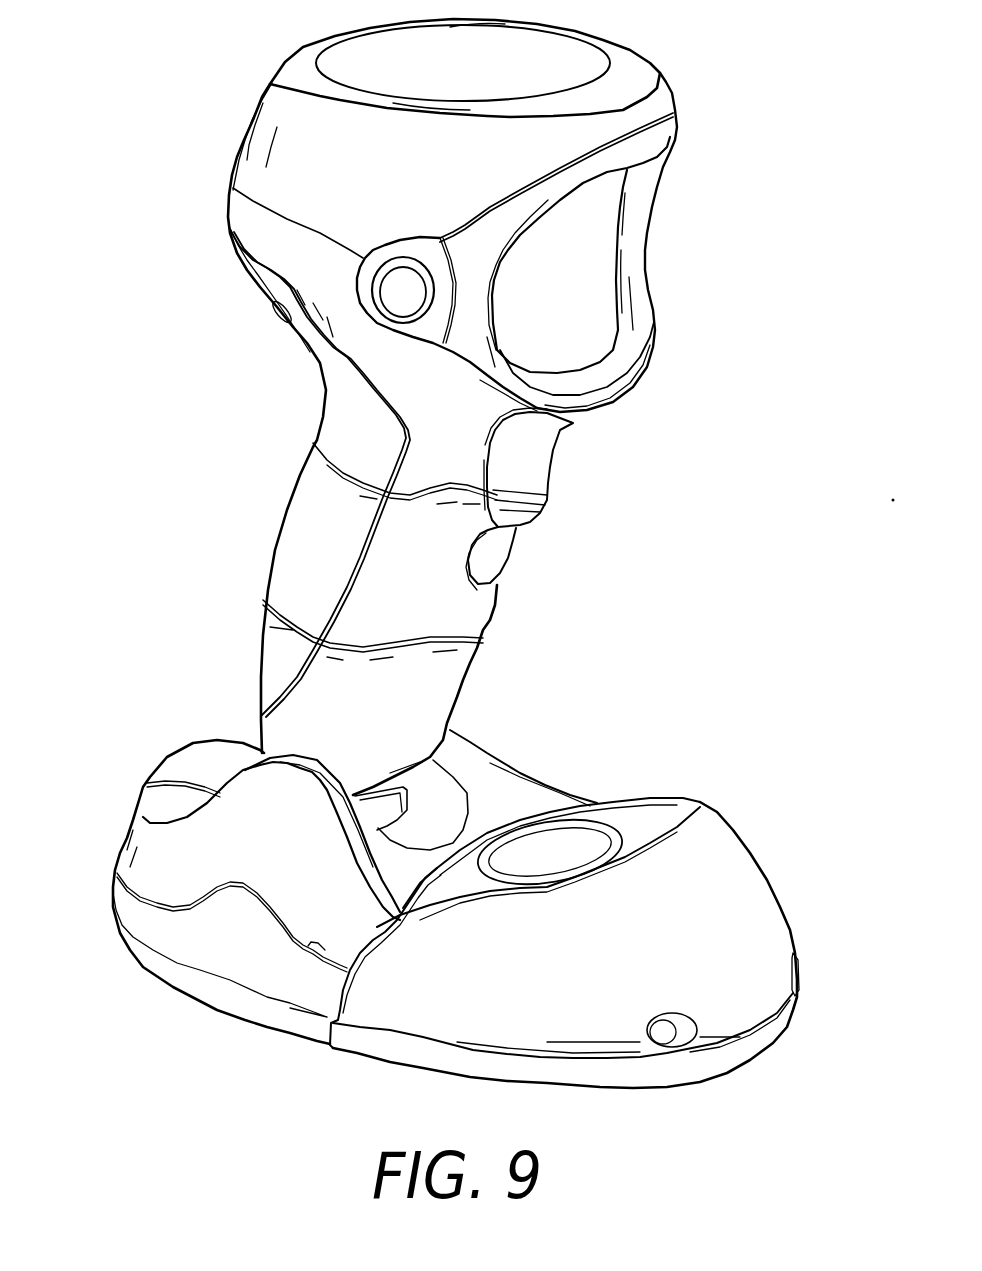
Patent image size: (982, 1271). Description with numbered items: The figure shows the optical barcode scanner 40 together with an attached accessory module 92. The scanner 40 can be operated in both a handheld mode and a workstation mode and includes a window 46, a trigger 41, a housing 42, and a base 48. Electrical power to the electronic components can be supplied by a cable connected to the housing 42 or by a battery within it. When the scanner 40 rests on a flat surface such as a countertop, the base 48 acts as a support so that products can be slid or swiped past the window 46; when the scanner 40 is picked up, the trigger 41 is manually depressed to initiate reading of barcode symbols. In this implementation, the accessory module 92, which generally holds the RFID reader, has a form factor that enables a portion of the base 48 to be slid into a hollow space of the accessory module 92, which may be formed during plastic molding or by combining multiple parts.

The optical barcode scanner 40 is at (396, 424).
The trigger 41 is at (537, 467).
The housing 42 is at (380, 545).
The window 46 is at (603, 208).
The base 48 is at (195, 893).
The accessory module 92 is at (767, 900).